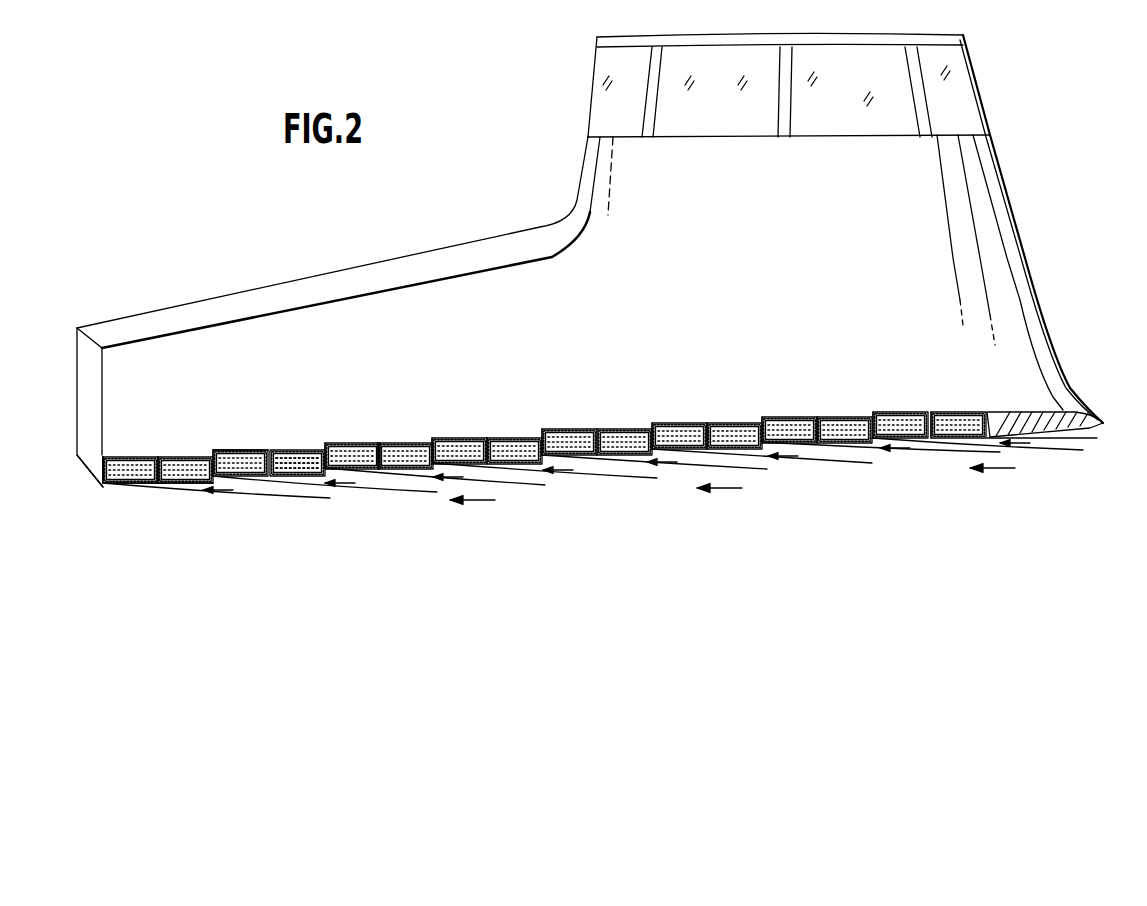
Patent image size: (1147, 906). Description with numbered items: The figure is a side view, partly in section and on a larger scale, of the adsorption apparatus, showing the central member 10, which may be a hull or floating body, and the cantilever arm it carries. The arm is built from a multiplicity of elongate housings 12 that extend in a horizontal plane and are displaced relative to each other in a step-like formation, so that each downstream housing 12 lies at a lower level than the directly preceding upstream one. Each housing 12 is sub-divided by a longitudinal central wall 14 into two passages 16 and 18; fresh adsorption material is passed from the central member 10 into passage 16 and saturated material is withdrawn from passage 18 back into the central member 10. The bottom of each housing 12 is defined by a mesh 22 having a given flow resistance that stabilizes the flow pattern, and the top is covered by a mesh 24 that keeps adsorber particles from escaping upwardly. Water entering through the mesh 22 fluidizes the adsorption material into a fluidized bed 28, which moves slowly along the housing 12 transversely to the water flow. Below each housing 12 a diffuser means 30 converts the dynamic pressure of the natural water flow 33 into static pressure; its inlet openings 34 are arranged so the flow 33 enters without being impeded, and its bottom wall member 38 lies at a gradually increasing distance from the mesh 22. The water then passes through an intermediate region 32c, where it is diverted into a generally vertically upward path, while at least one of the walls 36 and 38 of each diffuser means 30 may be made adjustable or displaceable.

The central member 10 is at (333, 310).
The housing 12 is at (337, 443).
The central wall 14 is at (172, 457).
The passage 16 is at (113, 455).
The passage 18 is at (193, 462).
The mesh 22 is at (138, 480).
The mesh 24 is at (247, 450).
The fluidized bed 28 is at (120, 480).
The diffuser means 30 is at (252, 495).
The intermediate region 32c is at (970, 446).
The flow of water 33 is at (727, 490).
The inlet openings 34 is at (333, 498).
The wall 36 is at (1075, 439).
The bottom wall member 38 is at (1060, 452).